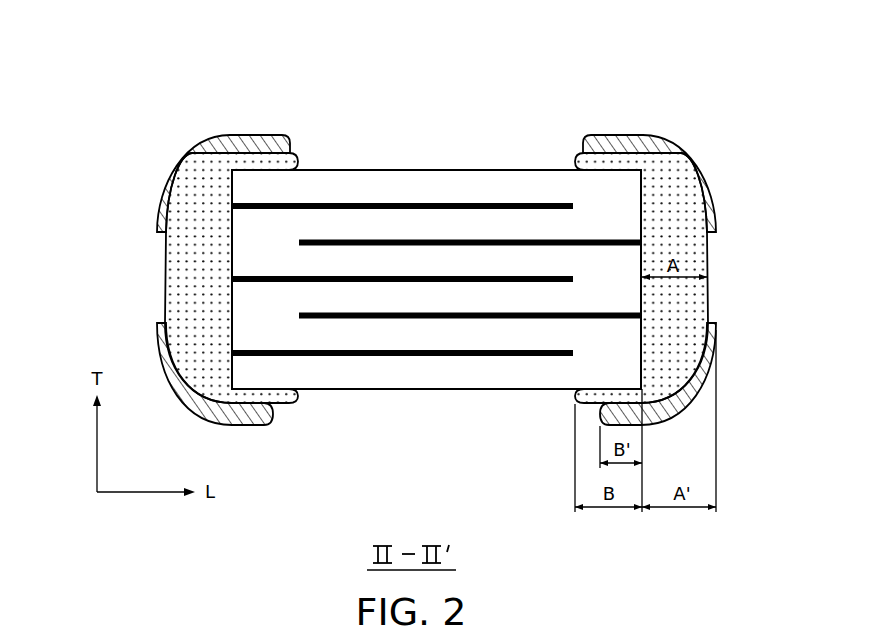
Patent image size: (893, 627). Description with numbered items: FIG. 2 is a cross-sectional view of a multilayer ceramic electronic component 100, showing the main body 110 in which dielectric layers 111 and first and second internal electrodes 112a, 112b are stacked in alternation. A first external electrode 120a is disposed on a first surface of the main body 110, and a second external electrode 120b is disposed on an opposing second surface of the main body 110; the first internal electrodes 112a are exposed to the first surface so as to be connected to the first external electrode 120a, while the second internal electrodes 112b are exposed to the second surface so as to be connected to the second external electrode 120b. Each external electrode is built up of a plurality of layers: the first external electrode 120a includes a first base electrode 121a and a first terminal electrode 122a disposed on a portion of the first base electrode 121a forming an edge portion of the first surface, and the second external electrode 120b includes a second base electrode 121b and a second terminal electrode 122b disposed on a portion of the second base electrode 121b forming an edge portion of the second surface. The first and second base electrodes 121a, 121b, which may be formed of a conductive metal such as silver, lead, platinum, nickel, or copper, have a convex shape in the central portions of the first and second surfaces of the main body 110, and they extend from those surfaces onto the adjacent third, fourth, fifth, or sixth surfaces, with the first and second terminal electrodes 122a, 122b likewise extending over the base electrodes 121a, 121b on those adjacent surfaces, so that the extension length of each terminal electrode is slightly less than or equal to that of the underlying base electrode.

The multilayer ceramic electronic component 100 is at (455, 19).
The main body 110 is at (530, 170).
The dielectric layers 111 is at (478, 190).
The first internal electrodes 112a is at (340, 204).
The second internal electrodes 112b is at (423, 241).
The first external electrode 120a is at (255, 126).
The second external electrode 120b is at (613, 126).
The first base electrode 121a is at (186, 296).
The second base electrode 121b is at (687, 293).
The first terminal electrode 122a is at (190, 152).
The second terminal electrode 122b is at (683, 152).